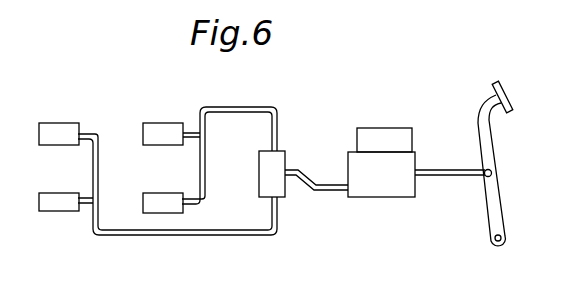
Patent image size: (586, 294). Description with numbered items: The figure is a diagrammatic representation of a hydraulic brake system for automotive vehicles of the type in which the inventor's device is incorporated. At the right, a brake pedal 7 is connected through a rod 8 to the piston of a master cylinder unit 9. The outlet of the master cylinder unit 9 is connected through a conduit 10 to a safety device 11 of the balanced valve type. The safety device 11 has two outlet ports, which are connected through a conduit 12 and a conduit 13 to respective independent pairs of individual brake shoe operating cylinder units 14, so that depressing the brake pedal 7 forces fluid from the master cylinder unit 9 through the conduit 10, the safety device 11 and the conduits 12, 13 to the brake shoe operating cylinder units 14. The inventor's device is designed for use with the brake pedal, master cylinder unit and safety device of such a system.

The brake pedal 7 is at (487, 142).
The rod 8 is at (458, 177).
The master cylinder unit 9 is at (390, 188).
The conduit 10 is at (322, 188).
The safety device 11 is at (273, 162).
The conduit 12 is at (220, 110).
The conduit 13 is at (175, 234).
The brake shoe operating cylinder units 14 is at (63, 138).